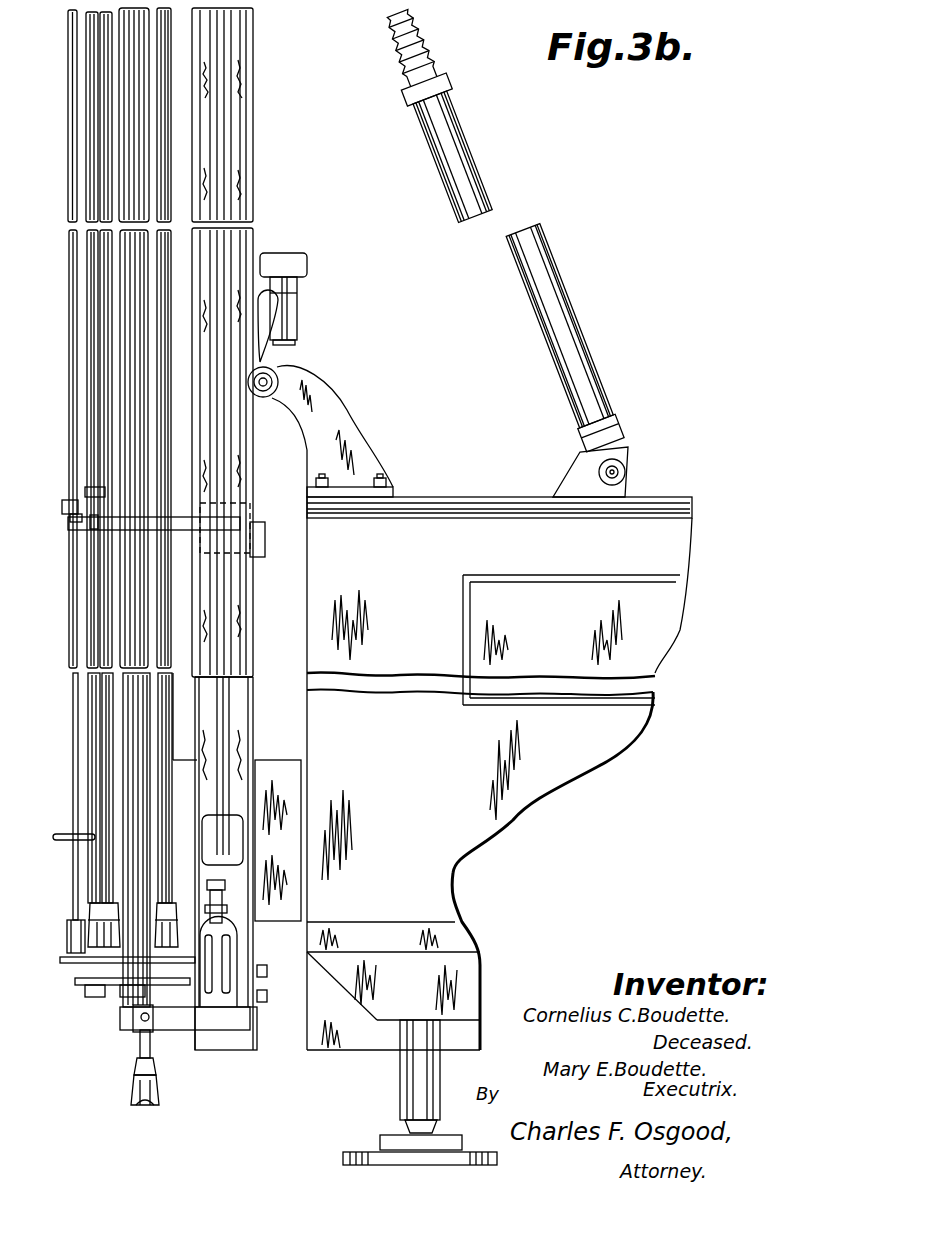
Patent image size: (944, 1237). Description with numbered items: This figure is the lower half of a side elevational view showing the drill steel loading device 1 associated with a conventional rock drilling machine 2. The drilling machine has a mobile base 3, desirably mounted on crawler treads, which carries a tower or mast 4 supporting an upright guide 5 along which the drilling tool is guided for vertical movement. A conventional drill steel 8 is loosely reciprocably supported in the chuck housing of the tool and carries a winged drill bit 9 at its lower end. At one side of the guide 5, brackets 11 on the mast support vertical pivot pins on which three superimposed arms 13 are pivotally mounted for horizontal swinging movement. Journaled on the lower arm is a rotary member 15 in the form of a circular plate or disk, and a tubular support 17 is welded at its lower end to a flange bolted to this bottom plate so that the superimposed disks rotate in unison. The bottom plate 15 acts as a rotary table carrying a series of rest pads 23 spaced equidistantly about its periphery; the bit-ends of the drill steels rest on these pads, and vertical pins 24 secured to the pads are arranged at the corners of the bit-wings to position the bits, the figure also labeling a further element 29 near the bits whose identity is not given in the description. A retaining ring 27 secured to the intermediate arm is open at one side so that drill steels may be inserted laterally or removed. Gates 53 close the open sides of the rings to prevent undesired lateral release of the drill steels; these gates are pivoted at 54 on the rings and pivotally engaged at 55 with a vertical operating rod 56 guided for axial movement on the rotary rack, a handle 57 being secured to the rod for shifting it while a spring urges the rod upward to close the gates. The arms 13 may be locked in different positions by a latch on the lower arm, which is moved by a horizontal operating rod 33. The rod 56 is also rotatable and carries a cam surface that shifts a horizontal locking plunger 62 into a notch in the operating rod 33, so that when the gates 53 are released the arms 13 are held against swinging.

The drill steel loading device 1 is at (66, 372).
The rock drilling machine 2 is at (466, 495).
The mobile base 3 is at (388, 1040).
The tower or mast 4 is at (252, 147).
The upright guide 5 is at (247, 243).
The drill steel 8 is at (172, 108).
The winged drill bit 9 is at (85, 940).
The brackets 11 is at (243, 530).
The superimposed arms 13 is at (190, 520).
The rotary member 15 is at (110, 968).
The tubular support 17 is at (130, 590).
The rest pads 23 is at (97, 958).
The pins 24 is at (172, 940).
The intermediate retaining ring 27 is at (93, 522).
The bit 29 is at (93, 927).
The operating rod 33 is at (130, 985).
The gates 53 is at (93, 493).
The gate pivot 54 is at (83, 520).
The gate pivotal connection 55 is at (70, 507).
The vertical operating rod 56 is at (75, 738).
The handle 57 is at (60, 840).
The locking plunger 62 is at (98, 985).